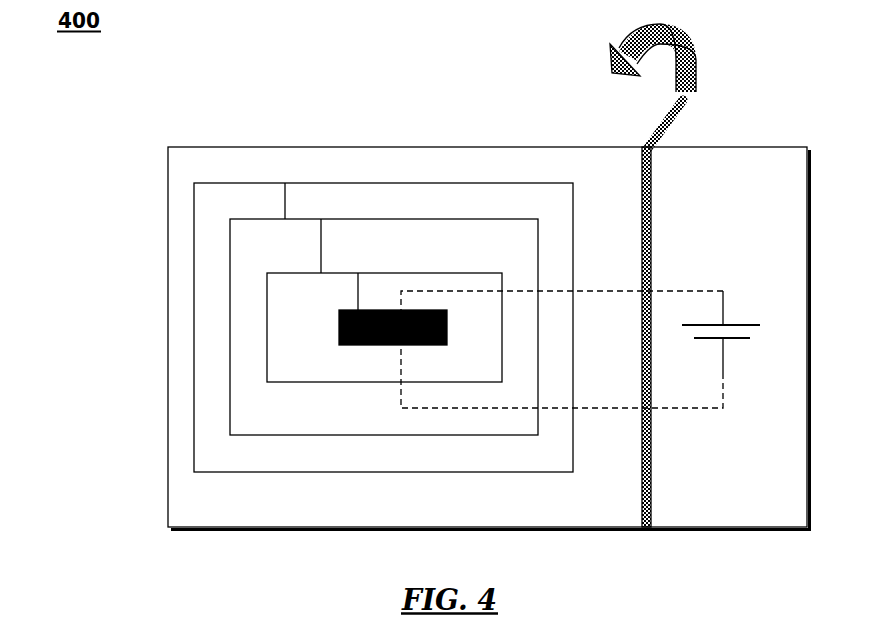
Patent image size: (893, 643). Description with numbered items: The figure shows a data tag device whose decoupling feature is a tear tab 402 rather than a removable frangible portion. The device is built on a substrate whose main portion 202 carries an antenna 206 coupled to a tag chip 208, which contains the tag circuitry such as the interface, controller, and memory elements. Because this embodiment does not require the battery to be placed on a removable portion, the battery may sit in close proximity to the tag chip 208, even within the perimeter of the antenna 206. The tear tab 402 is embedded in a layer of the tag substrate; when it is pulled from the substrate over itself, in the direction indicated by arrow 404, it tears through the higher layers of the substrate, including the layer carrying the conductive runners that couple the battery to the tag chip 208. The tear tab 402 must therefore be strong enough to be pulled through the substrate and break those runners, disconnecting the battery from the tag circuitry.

The main portion 202 is at (168, 363).
The antenna 206 is at (194, 447).
The tag chip 208 is at (379, 310).
The tear tab 402 is at (643, 173).
The arrow 404 is at (697, 58).